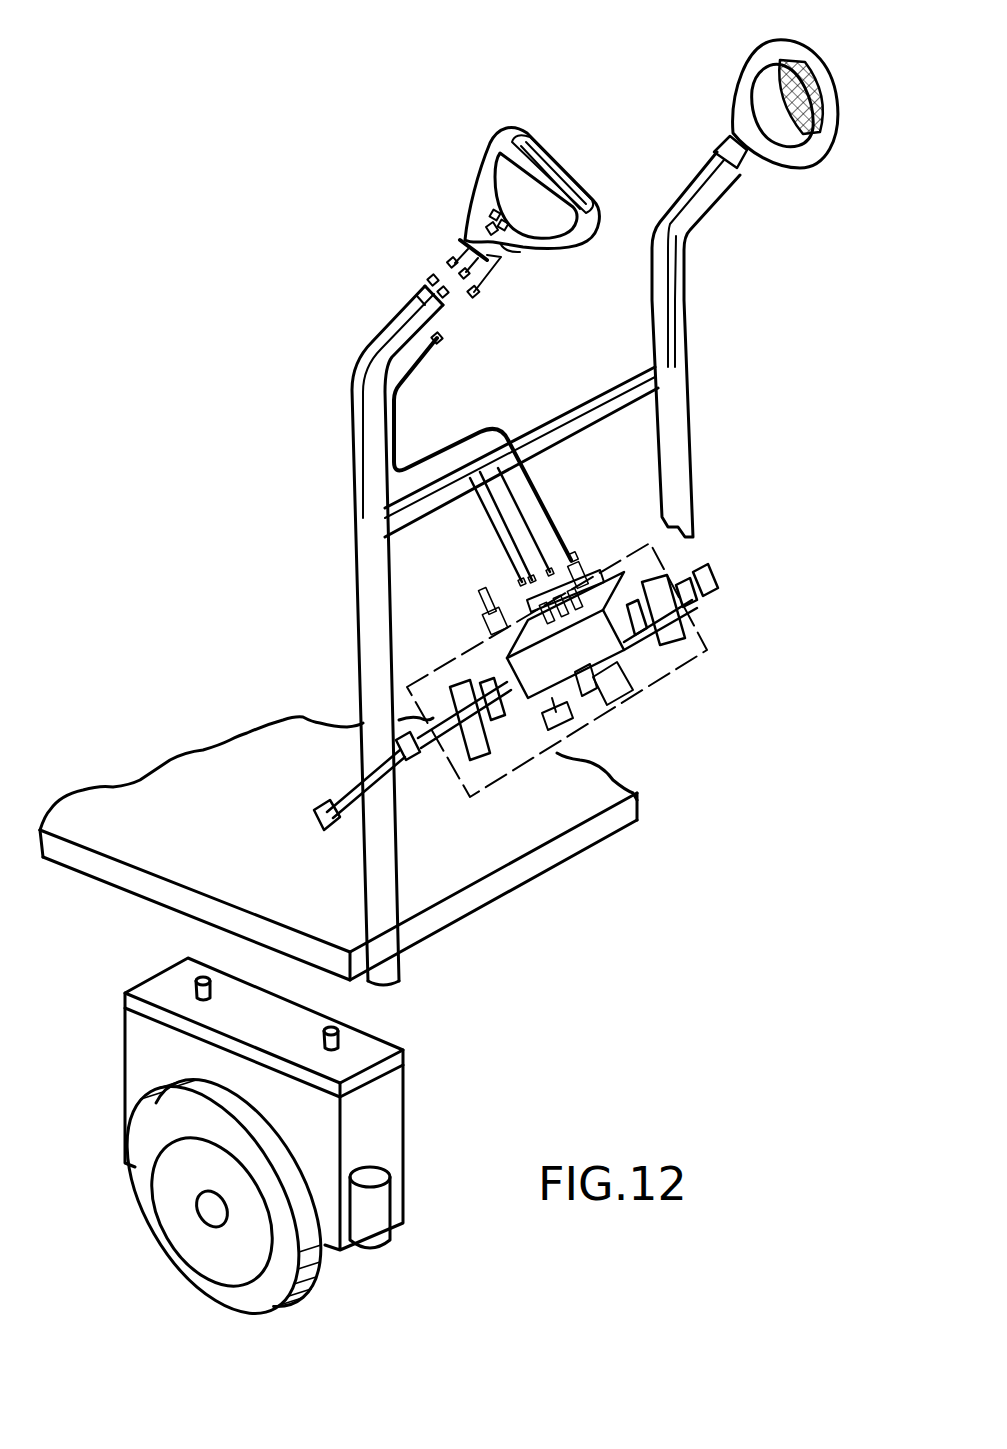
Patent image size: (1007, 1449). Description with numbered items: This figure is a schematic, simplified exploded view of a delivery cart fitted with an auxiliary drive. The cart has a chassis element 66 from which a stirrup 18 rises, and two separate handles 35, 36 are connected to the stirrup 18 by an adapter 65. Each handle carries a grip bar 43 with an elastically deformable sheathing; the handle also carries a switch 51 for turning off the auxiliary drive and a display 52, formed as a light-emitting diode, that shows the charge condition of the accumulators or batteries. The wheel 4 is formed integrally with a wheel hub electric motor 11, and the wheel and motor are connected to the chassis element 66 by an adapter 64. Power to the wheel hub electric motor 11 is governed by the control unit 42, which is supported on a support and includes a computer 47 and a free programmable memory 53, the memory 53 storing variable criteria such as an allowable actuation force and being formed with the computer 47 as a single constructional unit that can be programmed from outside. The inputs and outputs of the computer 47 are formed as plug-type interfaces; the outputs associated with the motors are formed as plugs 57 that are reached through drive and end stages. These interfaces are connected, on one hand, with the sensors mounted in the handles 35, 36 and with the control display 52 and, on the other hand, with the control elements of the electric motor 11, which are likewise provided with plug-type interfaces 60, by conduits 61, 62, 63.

The wheel 4 is at (270, 1283).
The wheel hub electric motor 11 is at (213, 1184).
The stirrup 18 is at (698, 398).
The handle 35 is at (562, 147).
The handle 36 is at (822, 70).
The control unit 42 is at (688, 660).
The grip bar 43 is at (565, 185).
The computer 47 is at (575, 654).
The switch 51 is at (492, 213).
The display 52 is at (503, 235).
The free programmable memory 53 is at (613, 685).
The plug 57 is at (680, 573).
The plug-type interface 60 is at (712, 578).
The conduit 61 is at (347, 790).
The conduit 62 is at (493, 517).
The conduit 63 is at (515, 517).
The adapter 64 is at (290, 1038).
The adapter 65 is at (460, 240).
The chassis element 66 is at (245, 841).